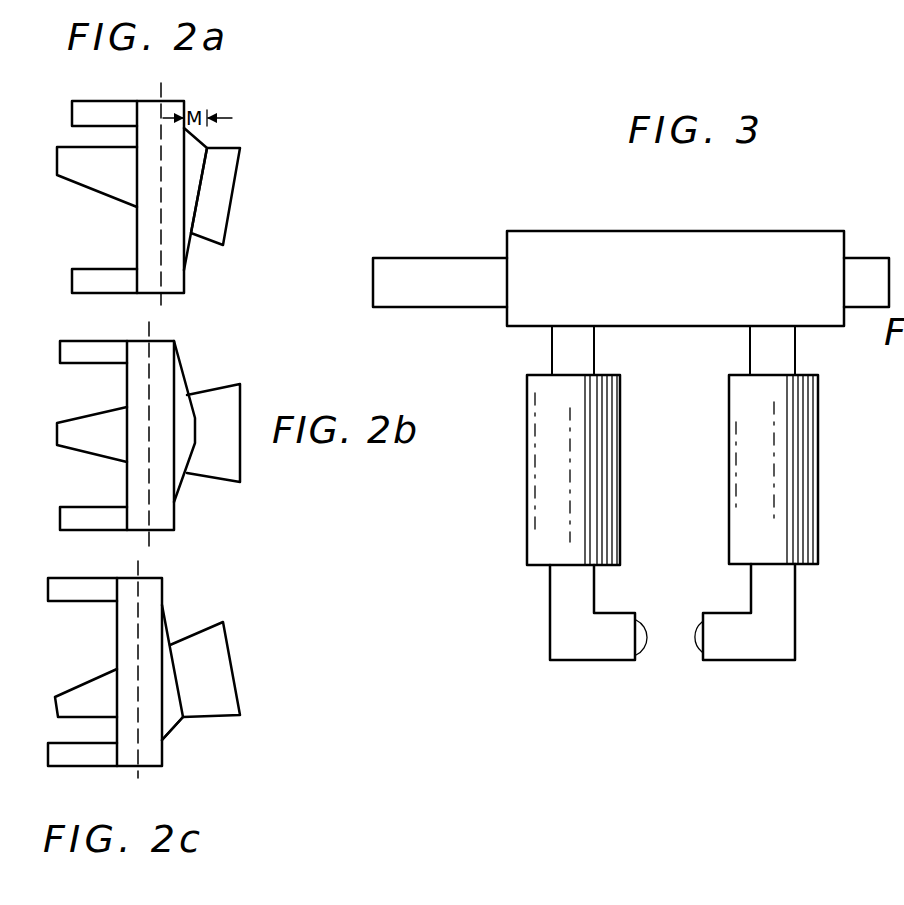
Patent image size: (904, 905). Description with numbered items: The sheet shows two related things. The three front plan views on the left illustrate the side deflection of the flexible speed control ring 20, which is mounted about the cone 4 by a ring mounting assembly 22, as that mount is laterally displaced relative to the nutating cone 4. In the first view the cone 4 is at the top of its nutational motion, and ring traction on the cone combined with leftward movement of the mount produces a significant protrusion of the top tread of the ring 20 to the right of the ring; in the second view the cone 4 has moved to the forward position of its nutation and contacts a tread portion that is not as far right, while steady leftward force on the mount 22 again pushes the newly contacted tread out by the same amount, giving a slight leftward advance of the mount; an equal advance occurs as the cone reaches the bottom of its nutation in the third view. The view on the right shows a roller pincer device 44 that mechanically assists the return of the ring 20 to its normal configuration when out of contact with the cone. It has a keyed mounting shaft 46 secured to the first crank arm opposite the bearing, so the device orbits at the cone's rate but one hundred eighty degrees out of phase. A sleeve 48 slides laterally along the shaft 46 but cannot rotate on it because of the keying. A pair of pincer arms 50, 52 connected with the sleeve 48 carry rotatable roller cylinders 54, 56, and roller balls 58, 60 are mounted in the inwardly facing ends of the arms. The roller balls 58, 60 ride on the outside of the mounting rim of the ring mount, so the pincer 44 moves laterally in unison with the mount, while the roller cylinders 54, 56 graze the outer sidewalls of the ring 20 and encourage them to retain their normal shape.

In FIG. 2a, the cone 4 is at (97, 175).
In FIG. 2b, the cone 4 is at (98, 425).
In FIG. 2c, the cone 4 is at (225, 678).
In FIG. 2a, the flexible speed control ring 20 is at (200, 200).
In FIG. 2b, the flexible speed control ring 20 is at (185, 388).
In FIG. 2c, the flexible speed control ring 20 is at (173, 717).
In FIG. 2a, the ring mounting assembly 22 is at (185, 112).
In FIG. 2b, the ring mounting assembly 22 is at (163, 352).
In FIG. 2c, the ring mounting assembly 22 is at (147, 595).
In FIG. 3, the roller pincer device 44 is at (800, 217).
In FIG. 3, the keyed mounting shaft 46 is at (448, 273).
In FIG. 3, the sleeve 48 is at (667, 243).
In FIG. 3, the pincer arm 50 is at (588, 350).
In FIG. 3, the pincer arm 52 is at (760, 348).
In FIG. 3, the roller cylinder 54 is at (542, 485).
In FIG. 3, the roller cylinder 56 is at (805, 478).
In FIG. 3, the roller ball 58 is at (637, 622).
In FIG. 3, the roller ball 60 is at (693, 637).